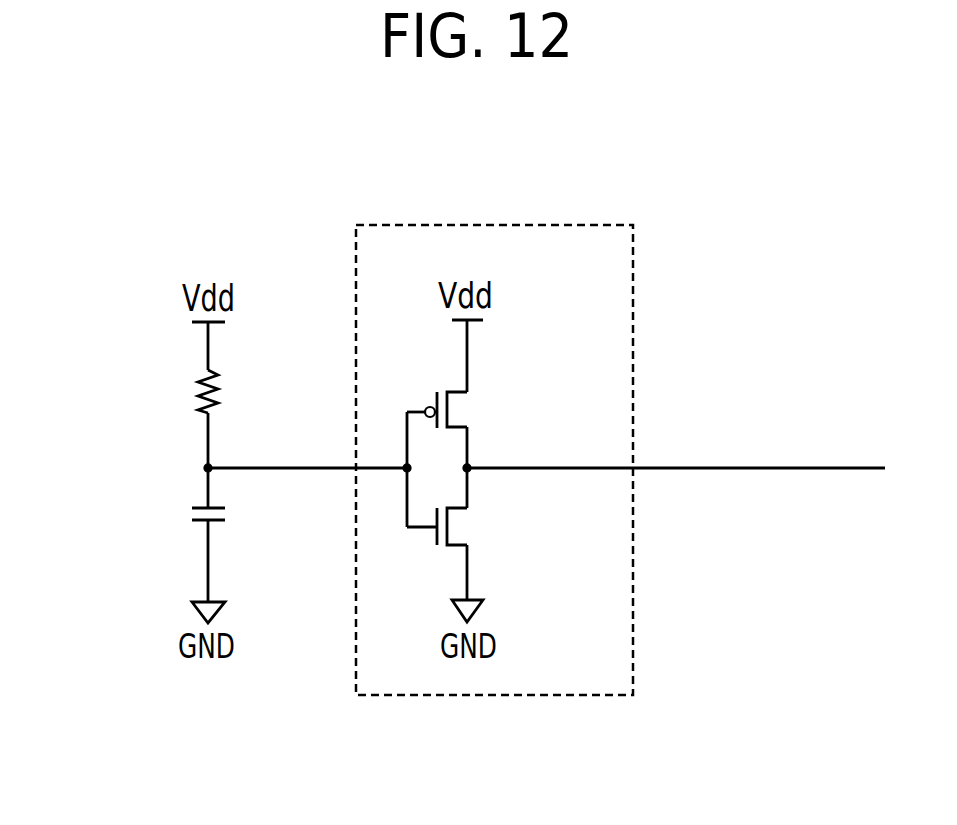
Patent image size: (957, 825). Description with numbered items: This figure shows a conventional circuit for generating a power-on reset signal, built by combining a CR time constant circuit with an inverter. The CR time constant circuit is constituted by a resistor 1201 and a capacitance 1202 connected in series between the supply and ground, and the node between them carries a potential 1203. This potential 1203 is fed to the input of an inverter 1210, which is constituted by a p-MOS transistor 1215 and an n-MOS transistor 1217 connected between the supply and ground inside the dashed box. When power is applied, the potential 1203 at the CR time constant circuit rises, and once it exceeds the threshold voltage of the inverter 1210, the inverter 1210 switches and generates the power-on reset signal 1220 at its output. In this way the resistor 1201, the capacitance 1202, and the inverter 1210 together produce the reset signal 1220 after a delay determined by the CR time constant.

The resistor 1201 is at (203, 391).
The capacitance 1202 is at (200, 506).
The potential 1203 is at (305, 467).
The inverter 1210 is at (633, 598).
The p-MOS transistor 1215 is at (460, 421).
The n-MOS transistor 1217 is at (460, 541).
The power-on reset signal 1220 is at (740, 467).